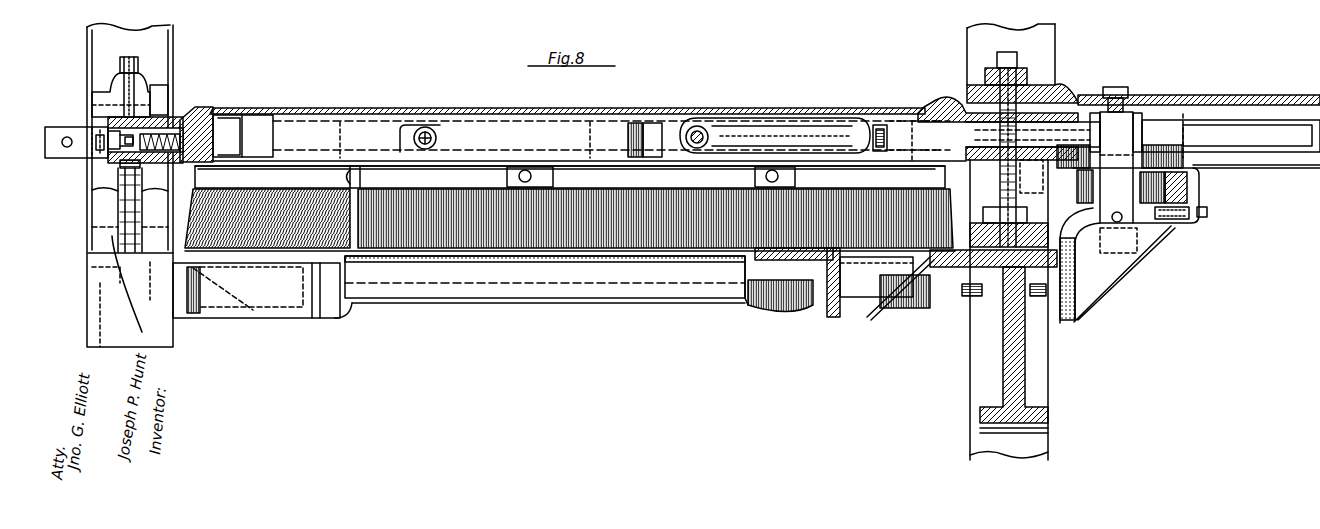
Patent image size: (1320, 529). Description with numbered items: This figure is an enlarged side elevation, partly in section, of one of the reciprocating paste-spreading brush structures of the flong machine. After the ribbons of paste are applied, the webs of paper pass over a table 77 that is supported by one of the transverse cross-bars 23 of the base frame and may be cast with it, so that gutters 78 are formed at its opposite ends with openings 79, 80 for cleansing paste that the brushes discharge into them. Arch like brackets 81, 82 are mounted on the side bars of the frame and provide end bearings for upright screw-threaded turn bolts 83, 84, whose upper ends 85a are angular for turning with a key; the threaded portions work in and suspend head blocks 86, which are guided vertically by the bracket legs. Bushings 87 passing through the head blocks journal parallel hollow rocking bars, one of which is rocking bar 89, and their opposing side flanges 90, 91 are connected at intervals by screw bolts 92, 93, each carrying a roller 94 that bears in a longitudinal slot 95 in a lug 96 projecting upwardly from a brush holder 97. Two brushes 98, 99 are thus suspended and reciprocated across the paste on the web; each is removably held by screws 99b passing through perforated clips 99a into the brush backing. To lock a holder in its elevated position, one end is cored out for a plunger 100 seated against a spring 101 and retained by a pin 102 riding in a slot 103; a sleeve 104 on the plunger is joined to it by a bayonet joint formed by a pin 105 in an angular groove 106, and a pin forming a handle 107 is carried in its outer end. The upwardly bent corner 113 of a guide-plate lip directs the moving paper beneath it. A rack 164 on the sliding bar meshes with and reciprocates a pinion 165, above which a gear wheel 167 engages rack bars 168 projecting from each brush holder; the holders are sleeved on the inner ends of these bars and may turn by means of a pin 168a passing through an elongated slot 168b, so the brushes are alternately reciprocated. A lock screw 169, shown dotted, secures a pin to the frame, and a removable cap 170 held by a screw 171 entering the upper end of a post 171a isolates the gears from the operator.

The cross-bar 23 is at (620, 293).
The table 77 is at (775, 262).
The gutter 78 is at (262, 300).
The opening 79 is at (848, 306).
The opening 80 is at (328, 311).
The arch like bracket 81 is at (156, 105).
The arch like bracket 82 is at (118, 72).
The turn bolt 83 is at (120, 182).
The turn bolt 84 is at (985, 75).
The angular upper end 85a is at (138, 58).
The head block 86 is at (1065, 70).
The bushing 87 is at (185, 118).
The hollow rocking bar 89 is at (254, 112).
The side flange 90 is at (357, 117).
The side flange 91 is at (661, 140).
The screw bolt 92 is at (427, 125).
The screw bolt 93 is at (700, 127).
The roller 94 is at (712, 127).
The longitudinal slot 95 is at (788, 128).
The lug 96 is at (697, 170).
The brush holder 97 is at (349, 165).
The brush 98 is at (482, 232).
The brush 99 is at (348, 250).
The perforated clip 99a is at (545, 170).
The screw 99b is at (507, 173).
The plunger 100 is at (88, 132).
The spring 101 is at (177, 160).
The pin 102 is at (165, 115).
The slot 103 is at (153, 85).
The sleeve 104 is at (97, 146).
The pin 105 is at (105, 131).
The angular groove 106 is at (104, 142).
The handle 107 is at (50, 127).
The upwardly bent corner 113 is at (807, 250).
The rack 164 is at (1188, 188).
The pinion 165 is at (1160, 223).
The gear wheel 167 is at (1150, 158).
The rack bar 168 is at (1260, 120).
The pin 168a is at (872, 154).
The elongated slot 168b is at (882, 145).
The lock screw 169 is at (1138, 270).
The removable cap 170 is at (1222, 102).
The screw 171 is at (1117, 95).
The post 171a is at (1127, 123).